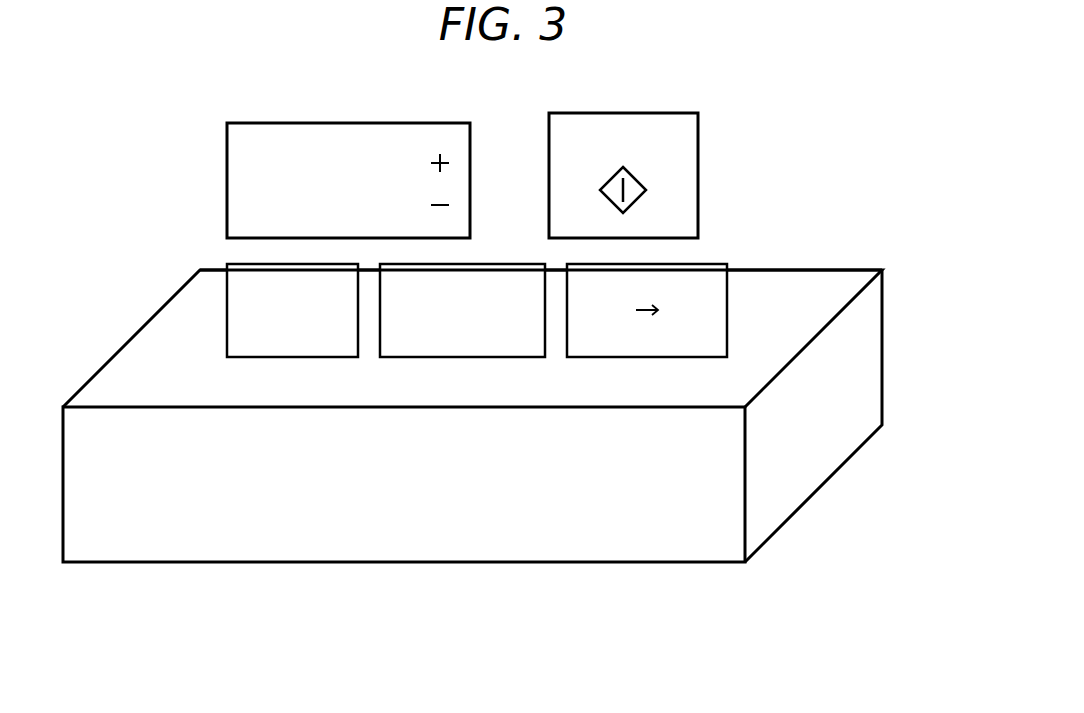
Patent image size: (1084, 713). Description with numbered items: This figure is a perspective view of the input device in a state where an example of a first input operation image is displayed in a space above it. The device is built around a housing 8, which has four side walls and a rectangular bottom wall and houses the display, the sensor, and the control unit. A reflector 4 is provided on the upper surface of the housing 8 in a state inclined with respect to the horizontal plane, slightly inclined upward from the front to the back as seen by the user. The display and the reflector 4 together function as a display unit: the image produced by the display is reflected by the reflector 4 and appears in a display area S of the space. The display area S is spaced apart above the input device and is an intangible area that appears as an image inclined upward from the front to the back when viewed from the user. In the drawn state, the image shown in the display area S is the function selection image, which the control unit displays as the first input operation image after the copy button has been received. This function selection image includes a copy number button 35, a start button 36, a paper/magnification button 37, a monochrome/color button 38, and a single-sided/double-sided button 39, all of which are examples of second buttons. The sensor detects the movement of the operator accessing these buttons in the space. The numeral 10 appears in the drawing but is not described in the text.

The reflector 4 is at (789, 280).
The housing 8 is at (870, 397).
The operation unit 10 is at (882, 270).
The copy number button 35 is at (227, 180).
The start button 36 is at (620, 113).
The display area S is at (720, 135).
The paper/magnification button 37 is at (227, 295).
The monochrome/color button 38 is at (502, 357).
The single-sided/double-sided button 39 is at (727, 315).